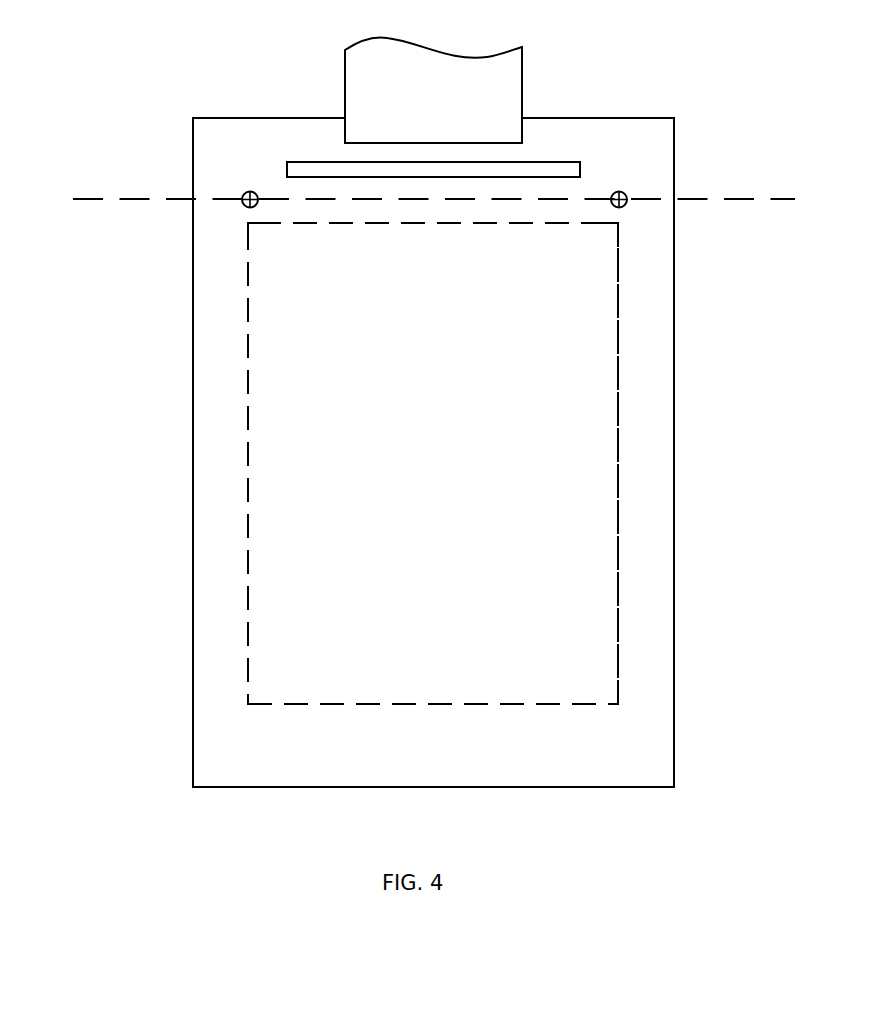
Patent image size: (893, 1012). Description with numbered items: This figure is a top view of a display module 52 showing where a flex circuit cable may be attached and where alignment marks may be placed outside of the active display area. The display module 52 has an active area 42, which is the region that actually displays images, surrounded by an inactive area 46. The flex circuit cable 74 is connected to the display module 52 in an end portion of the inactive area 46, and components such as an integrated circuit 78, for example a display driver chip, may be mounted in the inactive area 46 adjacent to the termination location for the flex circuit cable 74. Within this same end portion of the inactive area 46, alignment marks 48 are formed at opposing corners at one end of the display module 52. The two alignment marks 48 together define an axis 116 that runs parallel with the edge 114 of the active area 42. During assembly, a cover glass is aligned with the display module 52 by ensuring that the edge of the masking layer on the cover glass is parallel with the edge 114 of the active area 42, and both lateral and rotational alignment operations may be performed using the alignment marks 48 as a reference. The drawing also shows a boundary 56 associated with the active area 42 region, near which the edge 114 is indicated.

The active area 42 is at (600, 410).
The inactive area 46 is at (212, 162).
The alignment marks 48 is at (244, 204).
The display module 52 is at (674, 157).
The recess boundary 56 is at (618, 299).
The flex circuit cable 74 is at (522, 73).
The integrated circuit 78 is at (300, 162).
The edge 114 is at (293, 223).
The axis 116 is at (88, 198).